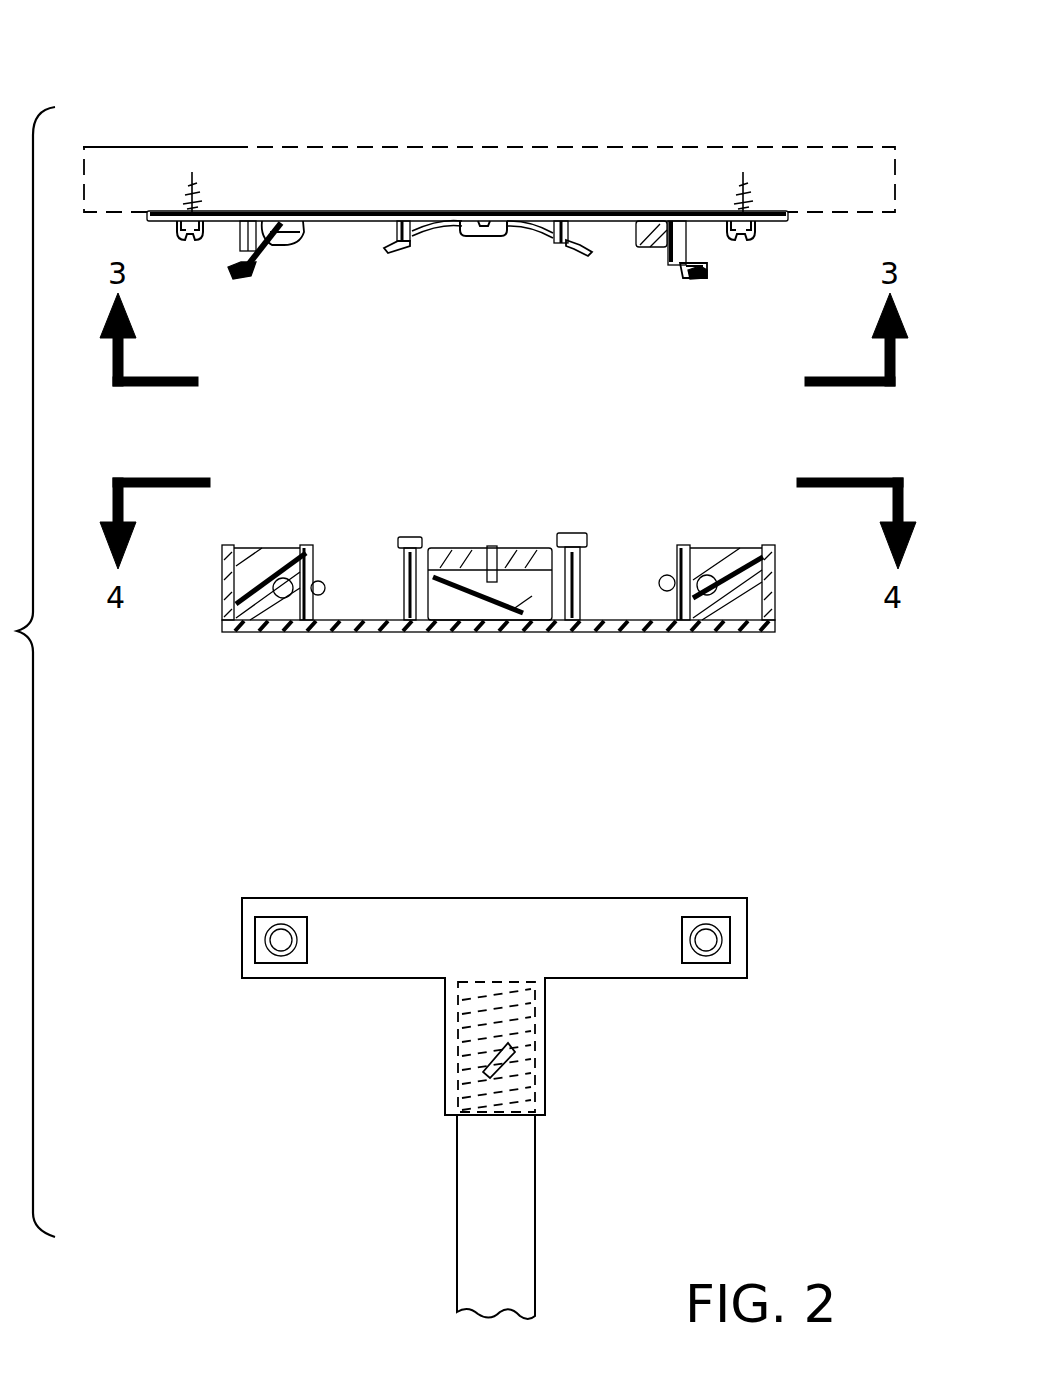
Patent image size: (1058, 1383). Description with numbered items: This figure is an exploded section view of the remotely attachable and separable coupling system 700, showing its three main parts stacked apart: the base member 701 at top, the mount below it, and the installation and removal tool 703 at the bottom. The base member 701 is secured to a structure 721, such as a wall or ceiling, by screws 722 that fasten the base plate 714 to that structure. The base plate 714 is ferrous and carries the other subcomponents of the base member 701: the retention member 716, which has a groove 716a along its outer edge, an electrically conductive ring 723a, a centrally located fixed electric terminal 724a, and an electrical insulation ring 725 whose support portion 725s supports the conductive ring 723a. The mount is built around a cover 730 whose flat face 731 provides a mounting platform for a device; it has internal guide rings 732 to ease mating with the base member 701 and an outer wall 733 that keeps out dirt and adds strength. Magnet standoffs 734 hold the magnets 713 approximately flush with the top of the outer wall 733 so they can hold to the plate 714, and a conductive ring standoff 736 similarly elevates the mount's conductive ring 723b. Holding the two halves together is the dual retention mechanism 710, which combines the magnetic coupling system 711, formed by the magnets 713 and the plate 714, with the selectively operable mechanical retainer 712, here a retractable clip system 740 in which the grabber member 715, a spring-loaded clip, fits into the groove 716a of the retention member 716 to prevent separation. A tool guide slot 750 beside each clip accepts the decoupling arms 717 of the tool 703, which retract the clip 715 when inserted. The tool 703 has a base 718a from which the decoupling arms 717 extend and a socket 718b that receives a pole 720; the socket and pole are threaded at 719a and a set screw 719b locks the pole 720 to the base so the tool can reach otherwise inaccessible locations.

The remotely attachable and separable coupling system 700 is at (905, 90).
The base member 701 is at (578, 108).
The installation and removal tool 703 is at (495, 865).
The dual retention mechanism 710 is at (300, 360).
The magnetic coupling system 711 is at (453, 520).
The selectively operable mechanical retainer 712 is at (667, 296).
The magnet 713 is at (526, 547).
The base plate 714 is at (770, 222).
The grabber member 715 is at (320, 595).
The retention member 716 is at (243, 276).
The groove 716a is at (235, 274).
The decoupling arms 717 is at (283, 917).
The base 718a is at (517, 898).
The socket 718b is at (557, 1136).
The threads 719a is at (536, 992).
The set screw 719b is at (535, 1035).
The pole 720 is at (537, 1222).
The structure 721 is at (232, 146).
The screws 722 is at (172, 240).
The electrically conductive ring 723a is at (590, 250).
The electrically conductive ring 723b is at (407, 536).
The fixed electric terminal 724a is at (487, 237).
The electrical insulation ring 725 is at (404, 249).
The support portion 725s is at (372, 226).
The cover 730 is at (226, 546).
The face 731 is at (300, 652).
The internal guide rings 732 is at (306, 546).
The outer wall 733 is at (205, 588).
The magnet standoffs 734 is at (530, 604).
The conductive ring standoff 736 is at (406, 600).
The retractable clip system 740 is at (748, 556).
The tool guide slot 750 is at (713, 600).